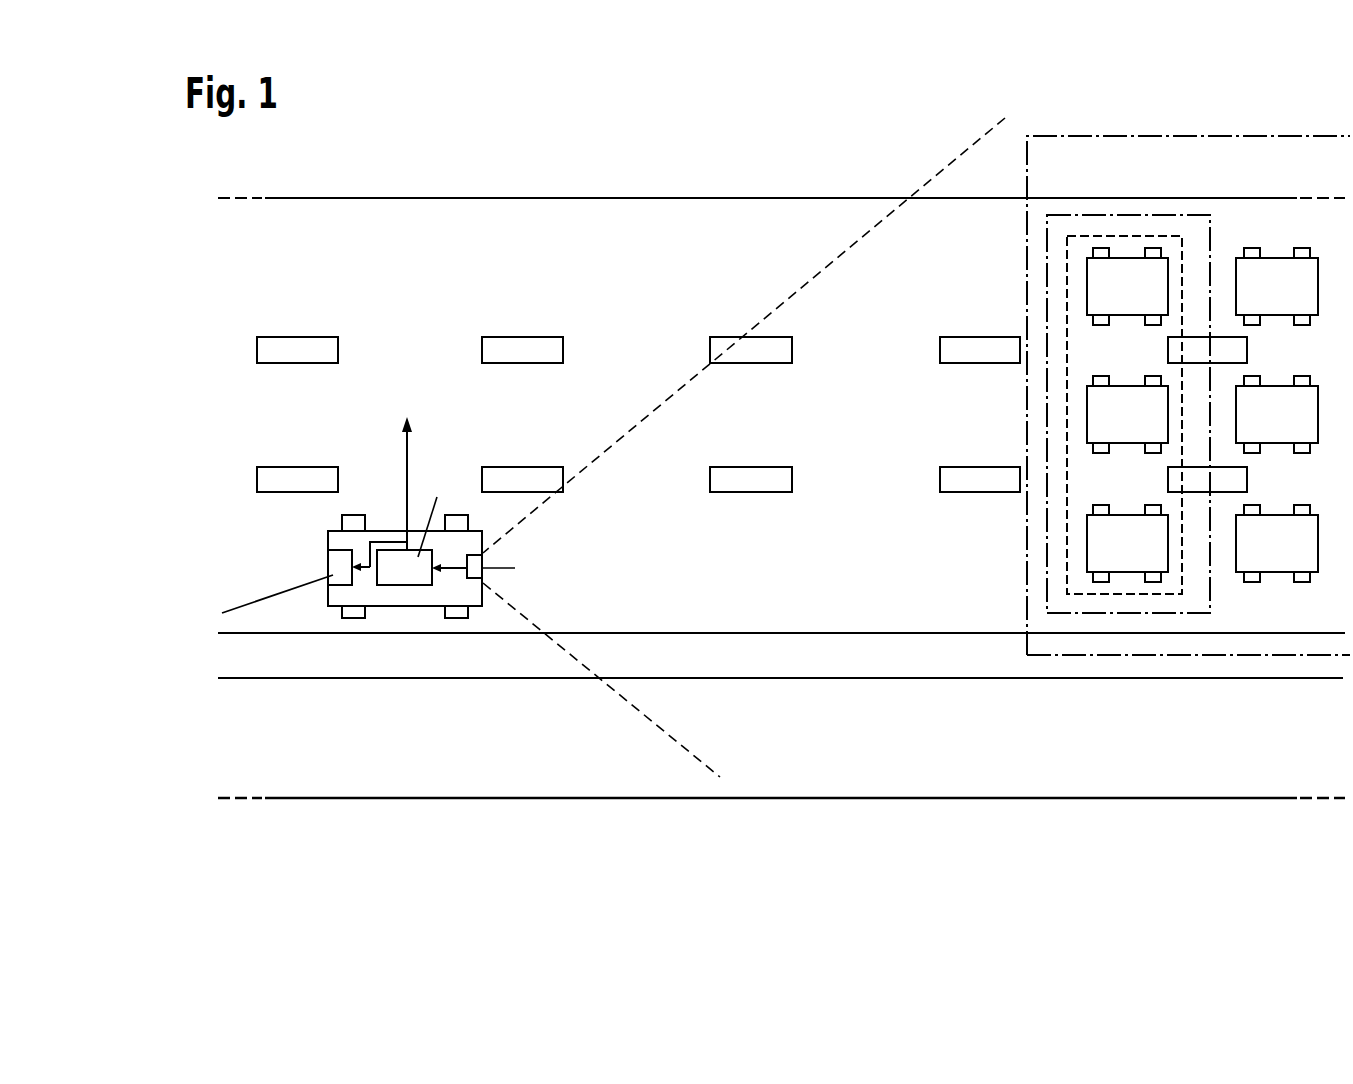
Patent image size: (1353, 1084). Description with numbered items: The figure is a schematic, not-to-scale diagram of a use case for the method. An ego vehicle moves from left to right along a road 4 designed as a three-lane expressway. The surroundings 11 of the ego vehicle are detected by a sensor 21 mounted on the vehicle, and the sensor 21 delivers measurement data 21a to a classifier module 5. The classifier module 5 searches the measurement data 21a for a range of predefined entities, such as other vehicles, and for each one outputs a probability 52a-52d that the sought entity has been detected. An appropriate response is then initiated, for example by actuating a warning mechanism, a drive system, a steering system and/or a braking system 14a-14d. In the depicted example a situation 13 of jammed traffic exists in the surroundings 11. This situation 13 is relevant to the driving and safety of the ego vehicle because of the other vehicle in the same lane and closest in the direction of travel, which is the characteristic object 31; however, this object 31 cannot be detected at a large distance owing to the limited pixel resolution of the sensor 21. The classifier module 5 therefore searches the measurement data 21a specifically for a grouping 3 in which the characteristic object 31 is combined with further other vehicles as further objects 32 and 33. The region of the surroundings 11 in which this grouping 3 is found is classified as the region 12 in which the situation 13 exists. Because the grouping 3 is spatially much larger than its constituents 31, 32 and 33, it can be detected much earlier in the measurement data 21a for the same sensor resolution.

The road 4 is at (493, 268).
The surroundings 11 is at (707, 413).
The region 12 is at (1142, 215).
The situation 13 is at (1243, 137).
The grouping 3 is at (1065, 283).
The characteristic object 31 is at (1112, 560).
The further object 32 is at (1112, 431).
The further object 33 is at (1112, 303).
The classifier module 5 is at (416, 582).
The probability 52a-52d is at (530, 417).
The warning mechanism, drive system, steering system and braking system 14a-14d is at (328, 571).
The sensor 21 is at (477, 581).
The measurement data 21a is at (458, 568).